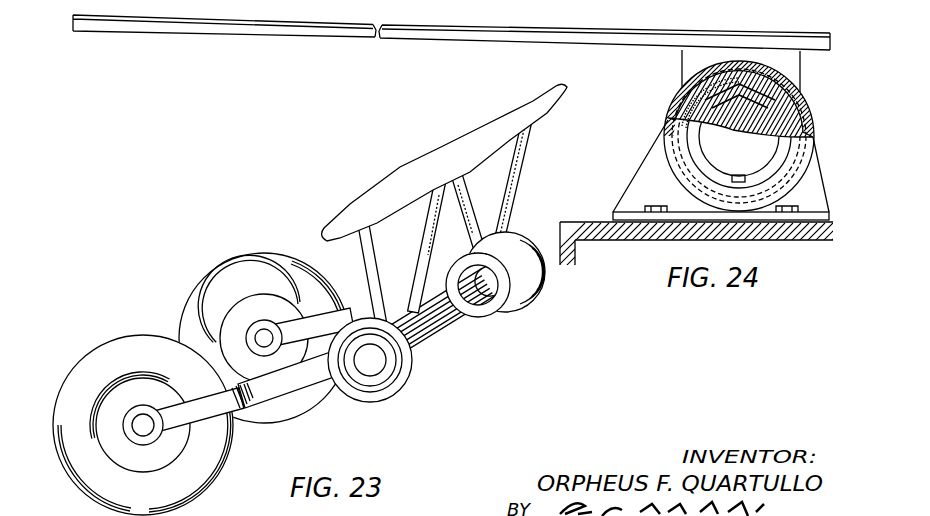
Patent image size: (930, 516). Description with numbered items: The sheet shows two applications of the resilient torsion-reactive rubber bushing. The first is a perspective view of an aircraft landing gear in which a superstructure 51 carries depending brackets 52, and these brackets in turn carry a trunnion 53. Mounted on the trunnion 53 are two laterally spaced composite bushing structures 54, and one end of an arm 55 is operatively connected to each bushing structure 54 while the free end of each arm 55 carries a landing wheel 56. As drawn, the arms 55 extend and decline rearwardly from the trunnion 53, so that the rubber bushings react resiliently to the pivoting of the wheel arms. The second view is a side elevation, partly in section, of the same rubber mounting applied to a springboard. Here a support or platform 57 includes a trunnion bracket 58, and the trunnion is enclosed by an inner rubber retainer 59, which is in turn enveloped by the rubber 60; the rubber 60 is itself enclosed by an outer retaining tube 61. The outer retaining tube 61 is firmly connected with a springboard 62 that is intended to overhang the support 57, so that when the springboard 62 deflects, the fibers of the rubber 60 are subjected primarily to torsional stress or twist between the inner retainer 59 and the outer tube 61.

In FIG. 23, the superstructure 51 is at (443, 163).
In FIG. 23, the depending brackets 52 is at (437, 223).
In FIG. 23, the trunnion 53 is at (443, 333).
In FIG. 23, the composite bushing structures 54 is at (530, 292).
In FIG. 23, the arm 55 is at (358, 293).
In FIG. 23, the landing wheel 56 is at (210, 290).
In FIG. 24, the support or platform 57 is at (630, 243).
In FIG. 24, the trunnion bracket 58 is at (641, 187).
In FIG. 24, the inner rubber retainer 59 is at (676, 113).
In FIG. 24, the rubber 60 is at (800, 98).
In FIG. 24, the outer retaining tube 61 is at (700, 76).
In FIG. 23, the springboard 62 is at (402, 36).